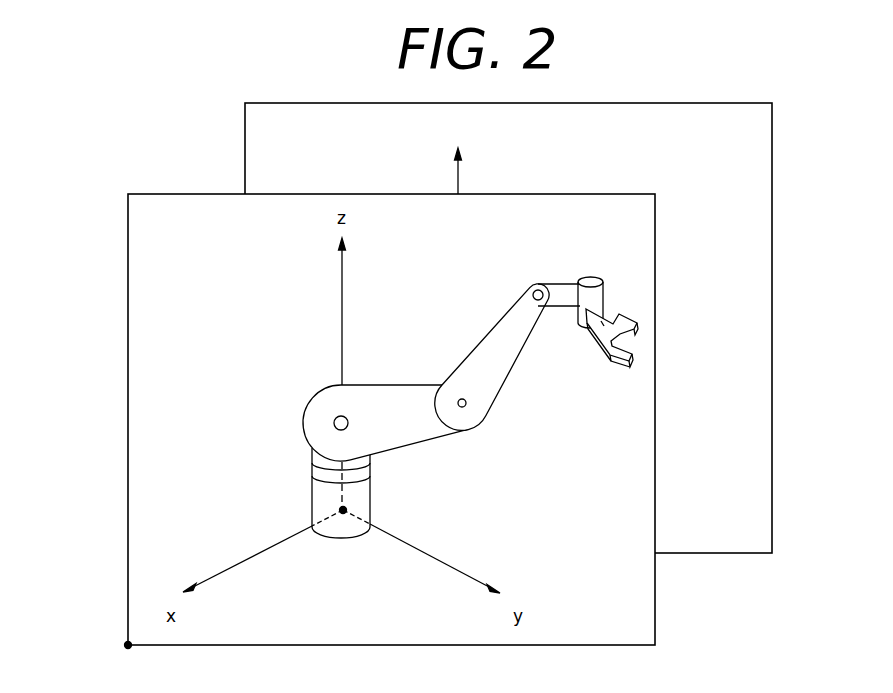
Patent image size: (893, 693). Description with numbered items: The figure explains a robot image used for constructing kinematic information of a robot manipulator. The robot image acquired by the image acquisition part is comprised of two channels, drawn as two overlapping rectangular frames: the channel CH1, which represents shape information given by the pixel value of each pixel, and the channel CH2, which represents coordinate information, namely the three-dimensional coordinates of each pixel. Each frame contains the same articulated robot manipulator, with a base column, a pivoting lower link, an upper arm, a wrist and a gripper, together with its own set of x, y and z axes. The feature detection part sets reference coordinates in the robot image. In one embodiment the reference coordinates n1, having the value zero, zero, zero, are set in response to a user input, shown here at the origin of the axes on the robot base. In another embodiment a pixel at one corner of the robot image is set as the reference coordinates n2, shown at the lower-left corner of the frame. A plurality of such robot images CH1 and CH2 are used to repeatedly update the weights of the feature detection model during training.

The reference coordinates n1 is at (343, 514).
The reference coordinates n2 is at (124, 644).
The robot image channel CH1 is at (391, 419).
The robot image channel CH2 is at (508, 328).